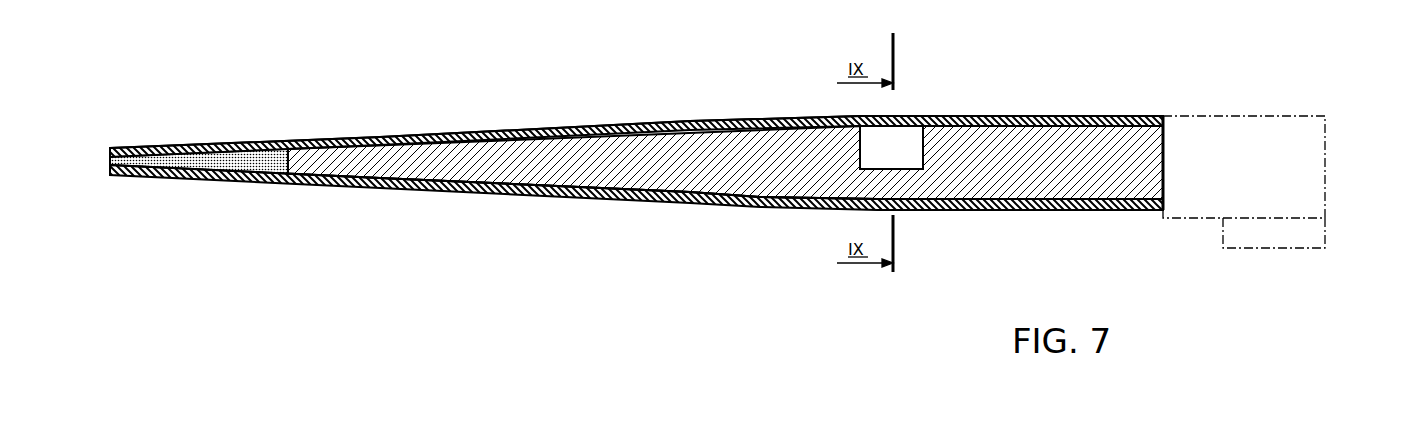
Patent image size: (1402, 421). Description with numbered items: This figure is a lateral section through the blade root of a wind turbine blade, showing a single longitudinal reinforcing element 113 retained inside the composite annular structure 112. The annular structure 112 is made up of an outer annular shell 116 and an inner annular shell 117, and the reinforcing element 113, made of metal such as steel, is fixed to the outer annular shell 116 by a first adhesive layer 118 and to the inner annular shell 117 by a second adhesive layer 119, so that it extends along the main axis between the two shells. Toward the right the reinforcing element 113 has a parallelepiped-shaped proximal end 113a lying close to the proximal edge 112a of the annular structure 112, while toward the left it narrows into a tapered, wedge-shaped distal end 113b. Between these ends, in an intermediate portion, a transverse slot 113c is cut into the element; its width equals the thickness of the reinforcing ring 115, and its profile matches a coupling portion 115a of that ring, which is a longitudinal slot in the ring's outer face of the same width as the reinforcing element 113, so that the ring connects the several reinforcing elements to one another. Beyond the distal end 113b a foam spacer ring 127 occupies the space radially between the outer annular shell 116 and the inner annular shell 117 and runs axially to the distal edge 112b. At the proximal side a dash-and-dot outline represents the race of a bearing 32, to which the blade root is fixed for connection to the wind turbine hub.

The annular structure 112 is at (695, 161).
The proximal edge 112a is at (1165, 163).
The distal edge 112b is at (99, 157).
The longitudinal reinforcing element 113 is at (750, 167).
The proximal end 113a is at (1052, 155).
The distal end 113b is at (413, 137).
The transverse slot 113c is at (905, 160).
The reinforcing ring 115 is at (873, 131).
The coupling portion 115a is at (873, 160).
The outer annular shell 116 is at (535, 128).
The inner annular shell 117 is at (792, 208).
The first adhesive layer 118 is at (660, 125).
The second adhesive layer 119 is at (610, 193).
The spacer ring 127 is at (227, 163).
The handle 32 is at (1272, 148).